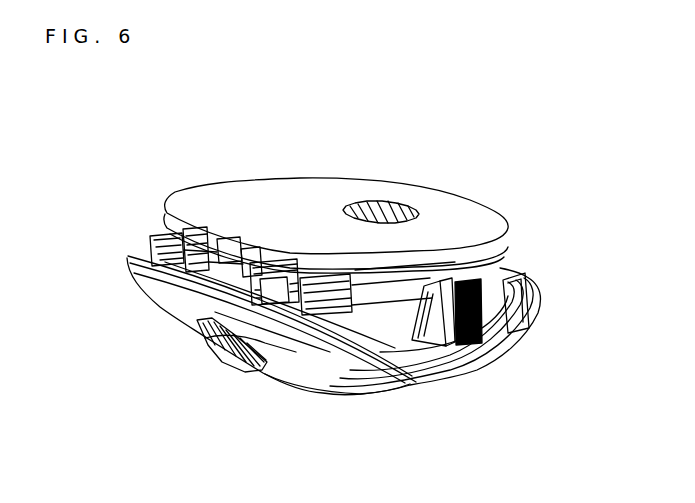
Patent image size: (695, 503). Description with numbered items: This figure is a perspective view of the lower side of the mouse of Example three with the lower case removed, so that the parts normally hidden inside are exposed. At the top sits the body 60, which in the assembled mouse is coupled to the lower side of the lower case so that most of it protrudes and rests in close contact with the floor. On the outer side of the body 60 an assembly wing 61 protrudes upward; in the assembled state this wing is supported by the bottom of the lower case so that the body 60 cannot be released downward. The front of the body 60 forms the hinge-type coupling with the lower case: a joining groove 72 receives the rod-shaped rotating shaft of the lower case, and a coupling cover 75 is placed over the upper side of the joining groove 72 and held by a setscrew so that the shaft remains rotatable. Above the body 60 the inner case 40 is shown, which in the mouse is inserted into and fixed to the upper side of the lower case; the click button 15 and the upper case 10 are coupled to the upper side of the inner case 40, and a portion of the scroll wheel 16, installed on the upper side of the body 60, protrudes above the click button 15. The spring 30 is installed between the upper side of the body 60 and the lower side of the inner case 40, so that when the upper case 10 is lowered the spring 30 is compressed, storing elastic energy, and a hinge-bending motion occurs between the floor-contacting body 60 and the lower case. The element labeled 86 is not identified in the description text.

The upper case 10 is at (443, 385).
The click button 15 is at (317, 368).
The scroll wheel 16 is at (199, 353).
The spring 30 is at (487, 373).
The inner case 40 is at (317, 335).
The body 60 is at (253, 207).
The assembly wing 61 is at (535, 328).
The joining groove 72 is at (160, 232).
The coupling cover 75 is at (165, 276).
The opening in cover 86 is at (383, 200).